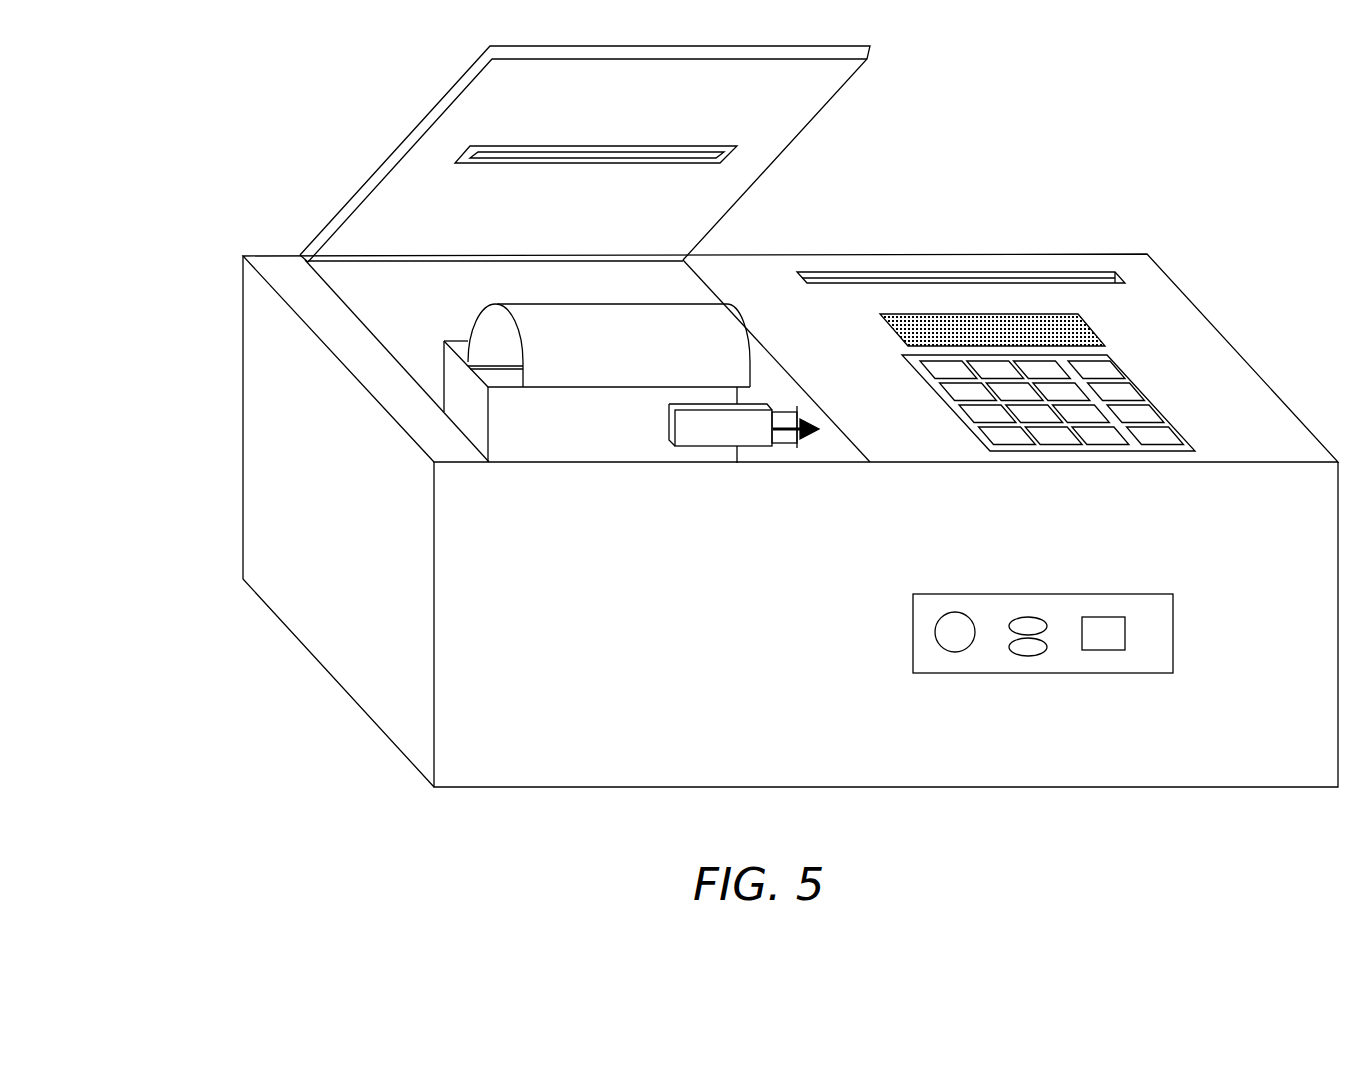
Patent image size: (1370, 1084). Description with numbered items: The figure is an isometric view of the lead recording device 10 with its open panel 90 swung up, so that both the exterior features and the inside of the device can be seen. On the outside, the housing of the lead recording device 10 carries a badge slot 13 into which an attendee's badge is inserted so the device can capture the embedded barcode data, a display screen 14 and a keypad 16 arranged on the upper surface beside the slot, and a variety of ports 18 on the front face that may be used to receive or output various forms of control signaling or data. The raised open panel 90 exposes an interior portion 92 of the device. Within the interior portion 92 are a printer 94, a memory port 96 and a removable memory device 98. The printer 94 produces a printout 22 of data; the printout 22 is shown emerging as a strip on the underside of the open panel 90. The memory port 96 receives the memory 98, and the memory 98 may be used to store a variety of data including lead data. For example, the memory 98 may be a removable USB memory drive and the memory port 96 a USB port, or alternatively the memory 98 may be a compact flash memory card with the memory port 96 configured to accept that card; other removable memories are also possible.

The lead recording device 10 is at (986, 174).
The badge slot 13 is at (799, 271).
The display screen 14 is at (1028, 314).
The keypad 16 is at (1137, 377).
The ports 18 is at (1133, 594).
The printout 22 is at (592, 165).
The open panel 90 is at (840, 90).
The interior portion 92 is at (350, 274).
The printer 94 is at (490, 410).
The memory port 96 is at (796, 401).
The removable memory device 98 is at (713, 437).